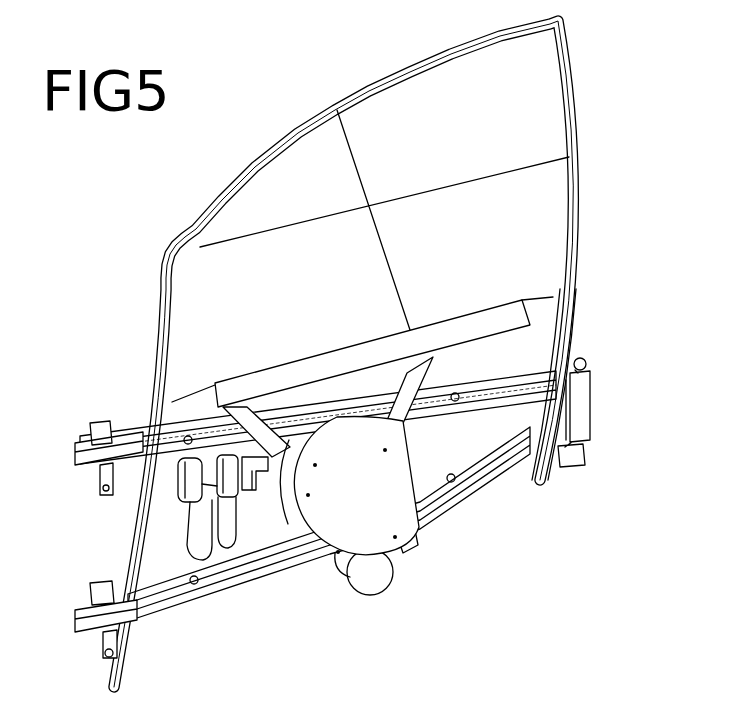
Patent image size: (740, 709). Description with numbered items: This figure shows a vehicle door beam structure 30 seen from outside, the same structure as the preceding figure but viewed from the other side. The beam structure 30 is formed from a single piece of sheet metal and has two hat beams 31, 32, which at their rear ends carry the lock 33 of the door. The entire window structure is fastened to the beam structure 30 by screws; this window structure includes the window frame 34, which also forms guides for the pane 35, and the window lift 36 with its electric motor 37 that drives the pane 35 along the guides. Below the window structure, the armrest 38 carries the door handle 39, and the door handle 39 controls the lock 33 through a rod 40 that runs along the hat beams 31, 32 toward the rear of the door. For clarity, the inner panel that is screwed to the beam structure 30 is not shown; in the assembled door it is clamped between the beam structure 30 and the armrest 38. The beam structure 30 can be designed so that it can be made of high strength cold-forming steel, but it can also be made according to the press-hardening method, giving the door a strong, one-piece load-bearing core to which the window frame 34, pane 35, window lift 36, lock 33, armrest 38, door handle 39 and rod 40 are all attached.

The beam structure 30 is at (79, 466).
The hat beam 31 is at (512, 373).
The hat beam 32 is at (490, 462).
The lock 33 is at (587, 408).
The window frame 34 is at (300, 130).
The pane 35 is at (533, 125).
The window lift 36 is at (320, 538).
The drive motor 37 is at (380, 575).
The armrest 38 is at (200, 502).
The door handle 39 is at (230, 497).
The rod 40 is at (263, 490).